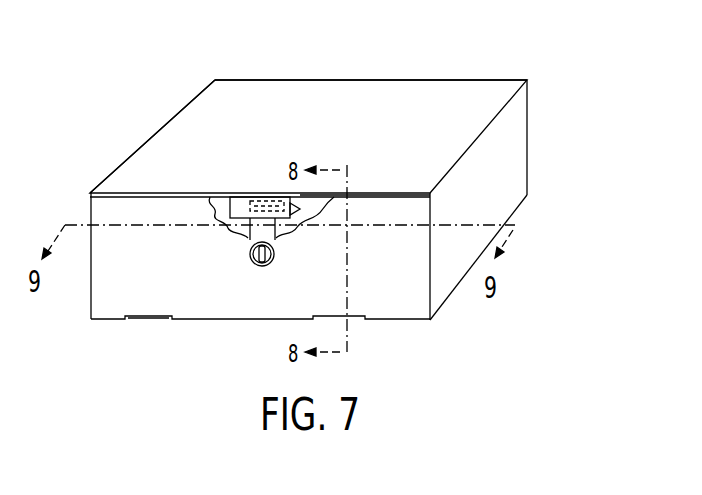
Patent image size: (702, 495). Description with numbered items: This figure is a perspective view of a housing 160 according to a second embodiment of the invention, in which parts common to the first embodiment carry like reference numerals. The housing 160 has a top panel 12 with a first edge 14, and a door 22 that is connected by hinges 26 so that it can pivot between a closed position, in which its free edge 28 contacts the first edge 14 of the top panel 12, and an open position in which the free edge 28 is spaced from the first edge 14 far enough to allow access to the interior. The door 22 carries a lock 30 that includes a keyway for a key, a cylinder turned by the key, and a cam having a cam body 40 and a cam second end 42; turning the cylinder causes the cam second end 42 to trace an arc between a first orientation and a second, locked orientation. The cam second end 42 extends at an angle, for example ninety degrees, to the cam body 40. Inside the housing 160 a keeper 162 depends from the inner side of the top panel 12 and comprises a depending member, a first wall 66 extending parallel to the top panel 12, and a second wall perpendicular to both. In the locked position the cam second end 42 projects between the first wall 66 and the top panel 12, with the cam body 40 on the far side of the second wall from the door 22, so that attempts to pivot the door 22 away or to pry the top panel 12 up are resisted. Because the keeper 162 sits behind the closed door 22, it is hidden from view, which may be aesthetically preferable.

The housing 160 is at (507, 56).
The top panel 12 is at (360, 92).
The first edge 14 is at (387, 182).
The door 22 is at (100, 298).
The hinges 26 is at (147, 322).
The free edge 28 is at (388, 210).
The lock 30 is at (255, 283).
The cam body 40 is at (268, 232).
The cam second end 42 is at (267, 198).
The first wall 66 is at (300, 207).
The keeper 162 is at (240, 205).